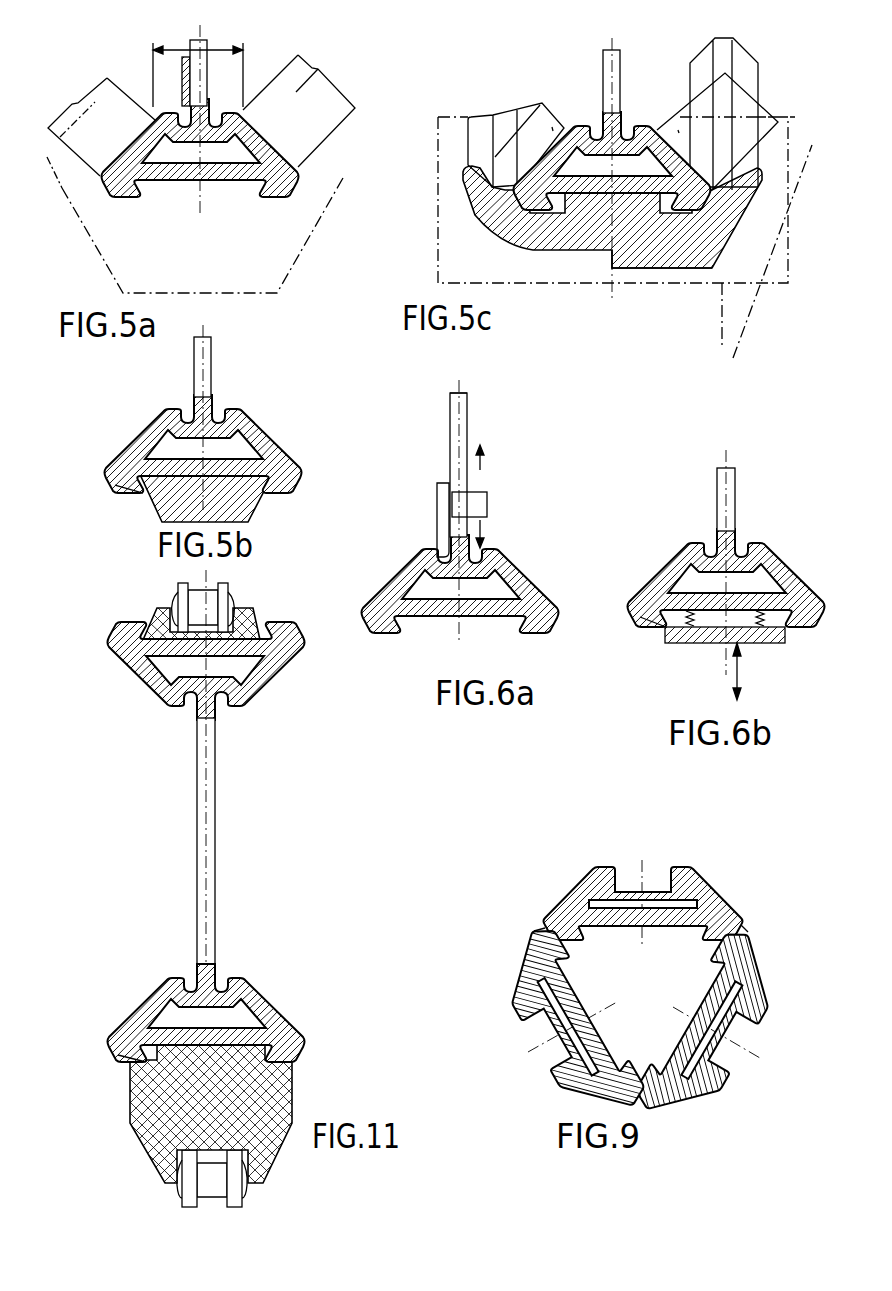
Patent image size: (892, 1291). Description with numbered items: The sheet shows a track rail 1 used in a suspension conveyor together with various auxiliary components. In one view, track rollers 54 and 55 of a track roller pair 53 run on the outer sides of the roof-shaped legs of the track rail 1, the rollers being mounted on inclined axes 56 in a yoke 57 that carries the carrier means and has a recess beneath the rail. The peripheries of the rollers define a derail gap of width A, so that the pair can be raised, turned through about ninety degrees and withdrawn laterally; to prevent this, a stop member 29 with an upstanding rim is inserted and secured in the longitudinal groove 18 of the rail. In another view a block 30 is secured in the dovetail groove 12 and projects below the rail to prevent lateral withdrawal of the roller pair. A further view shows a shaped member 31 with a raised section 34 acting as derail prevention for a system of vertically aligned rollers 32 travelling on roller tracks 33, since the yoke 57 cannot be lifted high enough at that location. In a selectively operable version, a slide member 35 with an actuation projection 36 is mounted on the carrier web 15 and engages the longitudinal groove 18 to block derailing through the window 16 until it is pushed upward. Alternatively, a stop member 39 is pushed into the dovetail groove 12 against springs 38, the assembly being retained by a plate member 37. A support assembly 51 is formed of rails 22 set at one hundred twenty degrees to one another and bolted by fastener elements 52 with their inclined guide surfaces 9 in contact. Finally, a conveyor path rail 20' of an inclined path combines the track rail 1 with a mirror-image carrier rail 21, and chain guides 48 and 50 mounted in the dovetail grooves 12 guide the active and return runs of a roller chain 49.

In FIG. 5A, the track rail 1 is at (243, 193).
In FIG. 5C, the track rail 1 is at (547, 133).
In FIG. 5B, the track rail 1 is at (287, 443).
In FIG. 6A, the track rail 1 is at (537, 577).
In FIG. 6B, the track rail 1 is at (802, 578).
In FIG. 11, the track rail 1 is at (282, 990).
In FIG. 5A, the carrier rail 21 is at (301, 191).
In FIG. 11, the carrier rail 21 is at (277, 667).
In FIG. 9, the inclined guide surfaces 9 is at (730, 920).
In FIG. 5B, the dovetail groove 12 is at (153, 493).
In FIG. 6B, the dovetail groove 12 is at (672, 613).
In FIG. 11, the dovetail groove 12 is at (128, 1058).
In FIG. 5A, the carrier web 15 is at (207, 77).
In FIG. 6A, the carrier web 15 is at (467, 443).
In FIG. 5A, the window 16 is at (205, 88).
In FIG. 5C, the window 16 is at (608, 65).
In FIG. 5B, the window 16 is at (202, 417).
In FIG. 6A, the window 16 is at (465, 405).
In FIG. 6B, the window 16 is at (726, 562).
In FIG. 5A, the longitudinal groove 18 is at (223, 178).
In FIG. 6A, the longitudinal groove 18 is at (447, 573).
In FIG. 11, the conveyor path rail 20' is at (167, 785).
In FIG. 9, the rails 22 is at (713, 892).
In FIG. 5A, the stop member 29 is at (153, 70).
In FIG. 5A, the derail gap width A is at (218, 47).
In FIG. 5B, the block 30 is at (230, 493).
In FIG. 5C, the shaped member 31 is at (580, 227).
In FIG. 5C, the vertically aligned rollers 32 is at (482, 143).
In FIG. 5C, the roller tracks 33 is at (738, 175).
In FIG. 5C, the raised section 34 is at (663, 247).
In FIG. 6A, the slide member 35 is at (442, 530).
In FIG. 6A, the actuation projection 36 is at (482, 505).
In FIG. 6B, the plate member 37 is at (782, 613).
In FIG. 6B, the springs 38 is at (745, 642).
In FIG. 6B, the stop member 39 is at (700, 620).
In FIG. 11, the chain guide 48 is at (160, 1102).
In FIG. 11, the roller chain 49 is at (170, 593).
In FIG. 11, the chain guide 50 is at (253, 610).
In FIG. 9, the support assembly 51 is at (562, 890).
In FIG. 9, the fastener elements 52 is at (678, 1007).
In FIG. 5A, the track roller pair 53 is at (92, 187).
In FIG. 5A, the track roller 54 is at (88, 108).
In FIG. 5C, the track roller 54 is at (553, 127).
In FIG. 5A, the track roller 55 is at (340, 130).
In FIG. 5C, the track roller 55 is at (678, 130).
In FIG. 5A, the inclined axes 56 is at (337, 82).
In FIG. 5A, the yoke 57 is at (190, 293).
In FIG. 5C, the yoke 57 is at (517, 285).